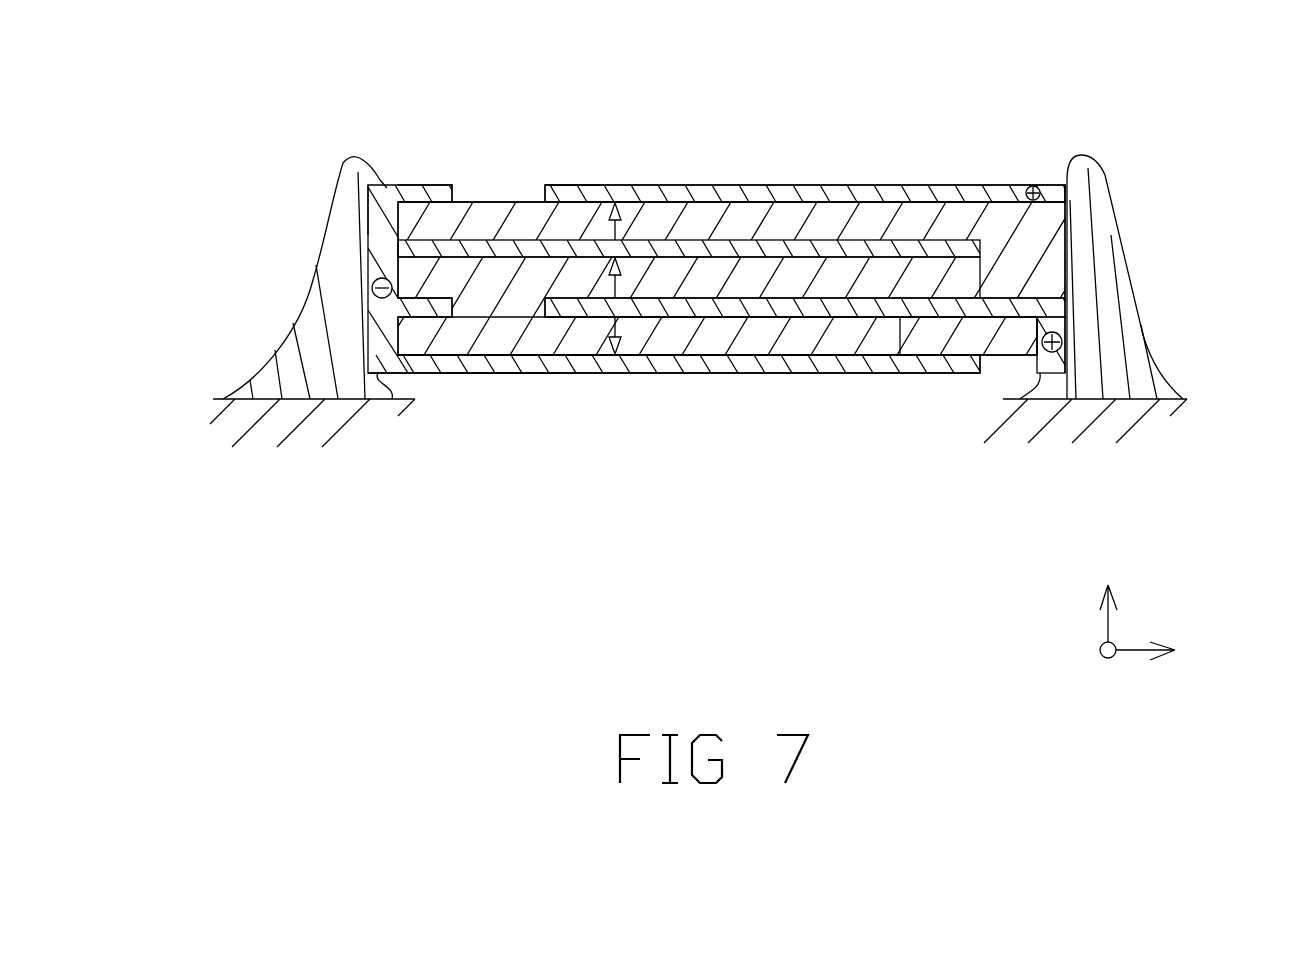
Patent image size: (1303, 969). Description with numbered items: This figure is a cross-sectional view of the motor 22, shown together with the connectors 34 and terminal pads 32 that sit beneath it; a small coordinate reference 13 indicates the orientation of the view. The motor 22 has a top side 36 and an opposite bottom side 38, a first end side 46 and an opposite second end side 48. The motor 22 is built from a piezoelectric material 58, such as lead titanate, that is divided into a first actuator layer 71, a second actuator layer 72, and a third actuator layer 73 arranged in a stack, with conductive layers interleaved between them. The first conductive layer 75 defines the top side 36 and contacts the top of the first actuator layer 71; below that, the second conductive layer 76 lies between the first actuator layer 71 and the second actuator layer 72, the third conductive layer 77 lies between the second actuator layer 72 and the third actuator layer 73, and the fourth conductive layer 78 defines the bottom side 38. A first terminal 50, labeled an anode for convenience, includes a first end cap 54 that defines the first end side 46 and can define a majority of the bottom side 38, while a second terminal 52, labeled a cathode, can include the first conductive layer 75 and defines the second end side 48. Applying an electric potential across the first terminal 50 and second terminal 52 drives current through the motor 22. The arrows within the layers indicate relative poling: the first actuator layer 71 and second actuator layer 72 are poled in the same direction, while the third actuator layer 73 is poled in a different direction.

The coordinate system 13 is at (1115, 702).
The motor 22 is at (667, 107).
The terminal pads 32 is at (213, 424).
The connectors 34 is at (300, 350).
The top side 36 is at (558, 187).
The bottom side 38 is at (502, 373).
The first end side 46 is at (368, 212).
The second end side 48 is at (1067, 207).
The first terminal 50 is at (415, 175).
The second terminal 52 is at (1062, 378).
The first end cap 54 is at (368, 197).
The piezoelectric material 58 is at (508, 163).
The first actuator layer 71 is at (803, 222).
The second actuator layer 72 is at (920, 285).
The third actuator layer 73 is at (926, 340).
The first conductive layer 75 is at (731, 193).
The second conductive layer 76 is at (885, 247).
The third conductive layer 77 is at (866, 312).
The fourth conductive layer 78 is at (703, 365).